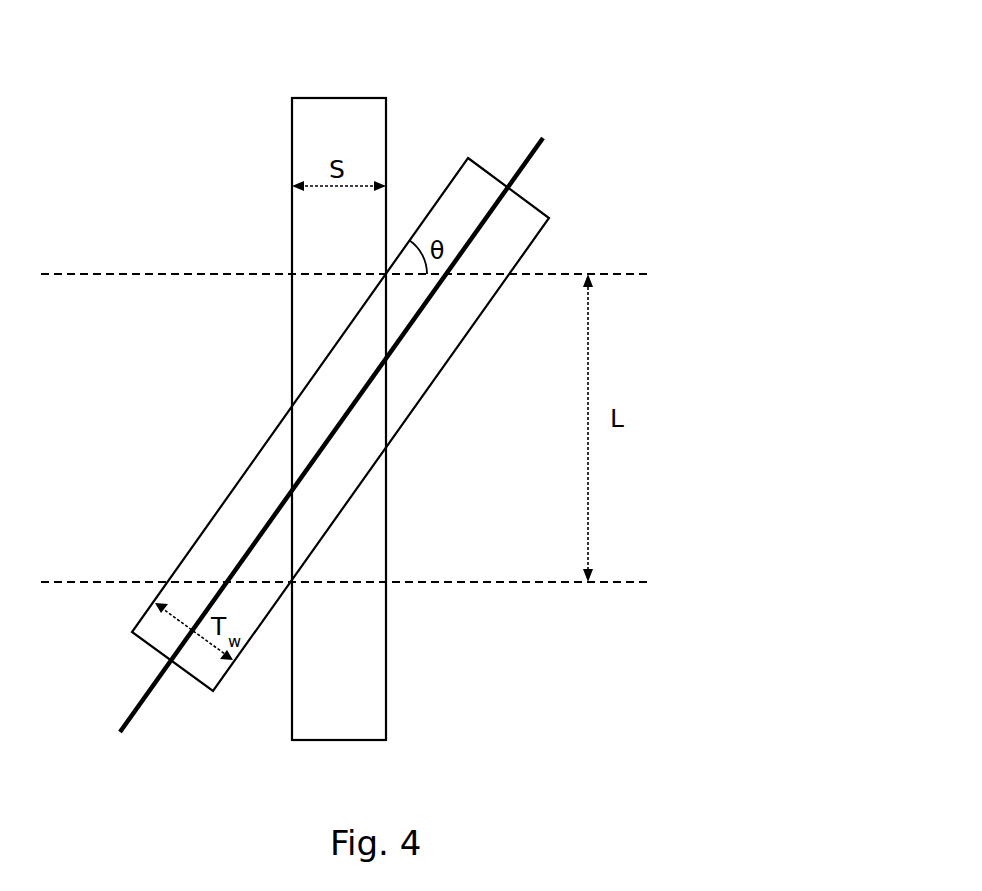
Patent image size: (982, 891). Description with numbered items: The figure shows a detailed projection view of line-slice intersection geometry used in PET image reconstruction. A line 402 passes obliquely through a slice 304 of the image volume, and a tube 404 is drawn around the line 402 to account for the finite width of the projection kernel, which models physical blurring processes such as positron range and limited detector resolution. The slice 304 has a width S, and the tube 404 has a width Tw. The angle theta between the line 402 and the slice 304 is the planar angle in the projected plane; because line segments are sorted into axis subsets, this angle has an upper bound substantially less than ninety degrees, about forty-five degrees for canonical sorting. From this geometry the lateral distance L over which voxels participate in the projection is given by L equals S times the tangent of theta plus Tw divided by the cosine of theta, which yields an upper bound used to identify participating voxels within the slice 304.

The slice 304 is at (334, 98).
The line 402 is at (535, 155).
The tube 404 is at (227, 498).